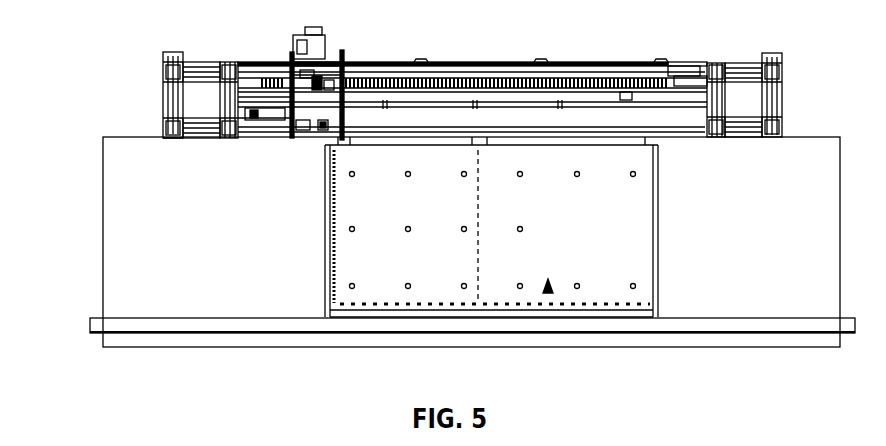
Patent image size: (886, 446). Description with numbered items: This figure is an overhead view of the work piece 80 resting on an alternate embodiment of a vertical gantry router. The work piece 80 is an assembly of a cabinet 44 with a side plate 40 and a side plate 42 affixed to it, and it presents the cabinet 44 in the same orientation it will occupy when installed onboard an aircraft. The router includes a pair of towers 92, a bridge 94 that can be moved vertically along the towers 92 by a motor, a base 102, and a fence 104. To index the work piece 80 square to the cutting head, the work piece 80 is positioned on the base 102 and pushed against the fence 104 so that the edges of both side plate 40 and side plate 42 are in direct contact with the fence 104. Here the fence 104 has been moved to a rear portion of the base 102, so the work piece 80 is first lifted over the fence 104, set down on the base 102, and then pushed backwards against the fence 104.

The side plate 40 is at (661, 183).
The side plate 42 is at (322, 185).
The cabinet 44 is at (597, 289).
The work piece 80 is at (548, 291).
The towers 92 is at (162, 90).
The bridge 94 is at (681, 65).
The base 102 is at (105, 243).
The fence 104 is at (92, 328).